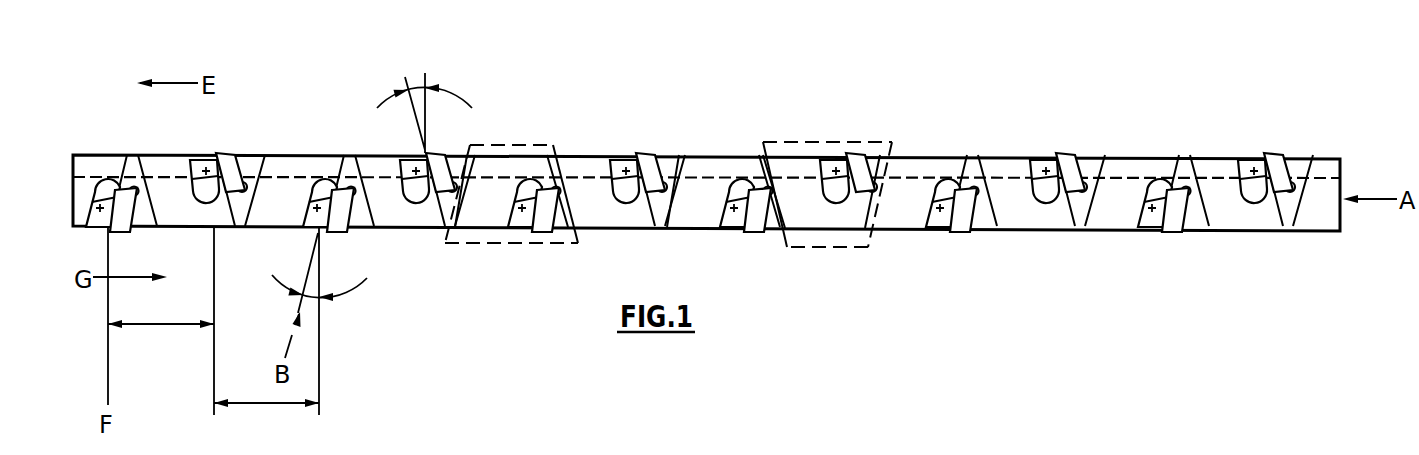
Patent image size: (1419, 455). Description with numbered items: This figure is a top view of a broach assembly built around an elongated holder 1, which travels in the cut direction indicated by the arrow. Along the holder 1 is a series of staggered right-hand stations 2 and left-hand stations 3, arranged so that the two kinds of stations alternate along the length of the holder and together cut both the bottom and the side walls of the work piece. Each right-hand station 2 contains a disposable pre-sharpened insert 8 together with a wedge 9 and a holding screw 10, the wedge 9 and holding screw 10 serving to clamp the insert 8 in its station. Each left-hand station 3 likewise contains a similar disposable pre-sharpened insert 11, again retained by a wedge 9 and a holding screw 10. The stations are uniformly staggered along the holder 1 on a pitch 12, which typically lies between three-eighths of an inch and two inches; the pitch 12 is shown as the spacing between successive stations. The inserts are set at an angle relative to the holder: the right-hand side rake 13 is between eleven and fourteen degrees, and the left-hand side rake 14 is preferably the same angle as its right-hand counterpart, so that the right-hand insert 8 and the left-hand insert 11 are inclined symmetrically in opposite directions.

The holder 1 is at (290, 155).
The right-hand station 2 is at (535, 245).
The left-hand station 3 is at (822, 142).
The disposable pre-sharpened insert 8 is at (333, 233).
The wedge 9 is at (407, 157).
The holding screw 10 is at (353, 157).
The disposable pre-sharpened insert 11 is at (435, 155).
The pitch 12 is at (250, 400).
The right-hand side rake 13 is at (323, 303).
The left-hand side rake 14 is at (415, 90).